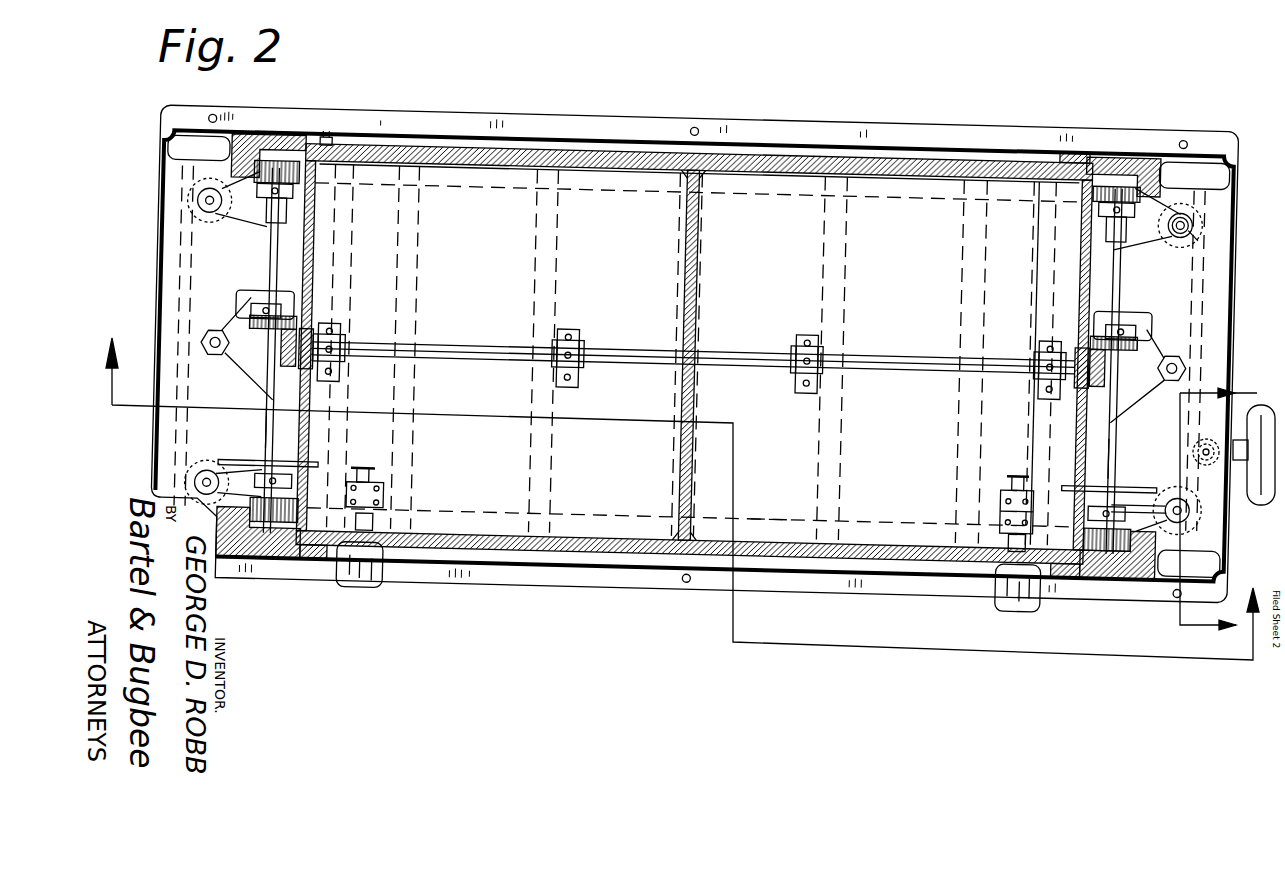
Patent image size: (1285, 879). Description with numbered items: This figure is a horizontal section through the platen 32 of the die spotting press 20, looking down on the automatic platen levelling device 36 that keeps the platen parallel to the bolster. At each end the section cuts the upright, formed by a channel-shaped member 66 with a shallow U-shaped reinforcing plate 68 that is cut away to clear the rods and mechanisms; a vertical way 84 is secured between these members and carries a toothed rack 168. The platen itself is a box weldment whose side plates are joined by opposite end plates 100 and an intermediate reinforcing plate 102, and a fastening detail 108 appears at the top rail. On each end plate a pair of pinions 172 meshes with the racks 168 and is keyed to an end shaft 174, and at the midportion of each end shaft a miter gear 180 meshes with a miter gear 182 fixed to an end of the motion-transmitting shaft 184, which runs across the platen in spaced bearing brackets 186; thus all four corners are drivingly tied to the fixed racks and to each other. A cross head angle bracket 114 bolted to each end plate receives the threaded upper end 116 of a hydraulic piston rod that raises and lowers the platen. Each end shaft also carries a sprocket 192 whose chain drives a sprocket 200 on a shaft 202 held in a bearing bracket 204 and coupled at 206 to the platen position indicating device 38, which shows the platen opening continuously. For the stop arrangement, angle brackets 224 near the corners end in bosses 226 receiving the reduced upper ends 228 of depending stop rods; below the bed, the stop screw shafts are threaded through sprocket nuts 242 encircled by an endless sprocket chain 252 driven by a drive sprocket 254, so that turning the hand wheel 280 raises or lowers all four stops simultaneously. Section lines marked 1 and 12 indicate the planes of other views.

The section line 1- 1 is at (682, 487).
The section line 12- 12 is at (1221, 510).
The die spotting press 20 is at (1232, 130).
The platen 32 is at (876, 158).
The automatic platen levelling device 36 is at (726, 340).
The platen position indicating device 38 is at (386, 572).
The channel-shaped member 66 is at (160, 212).
The reinforcing plate 68 is at (178, 248).
The way 84 is at (262, 128).
The end plate 100 is at (314, 265).
The intermediate reinforcing plate 102 is at (698, 252).
The fastener 108 is at (329, 136).
The cross head angle bracket 114 is at (240, 325).
The threaded upper end 116 is at (212, 335).
The toothed rack 168 is at (200, 185).
The pinion 172 is at (305, 172).
The end shaft 174 is at (268, 392).
The miter gear 180 is at (300, 330).
The miter gear 182 is at (330, 365).
The motion-transmitting shaft 184 is at (425, 348).
The bearing bracket 186 is at (340, 340).
The sprocket 192 is at (715, 443).
The sprocket 200 is at (376, 470).
The shaft 202 is at (380, 485).
The bearing bracket 204 is at (385, 503).
The coupling 206 is at (381, 520).
The angle bracket 224 is at (248, 215).
The boss 226 is at (1182, 214).
The reduced diameter upper end 228 is at (1180, 222).
The sprocket nut 242 is at (1155, 428).
The sprocket chain 252 is at (773, 499).
The drive sprocket 254 is at (1105, 505).
The hand wheel 280 is at (1244, 500).